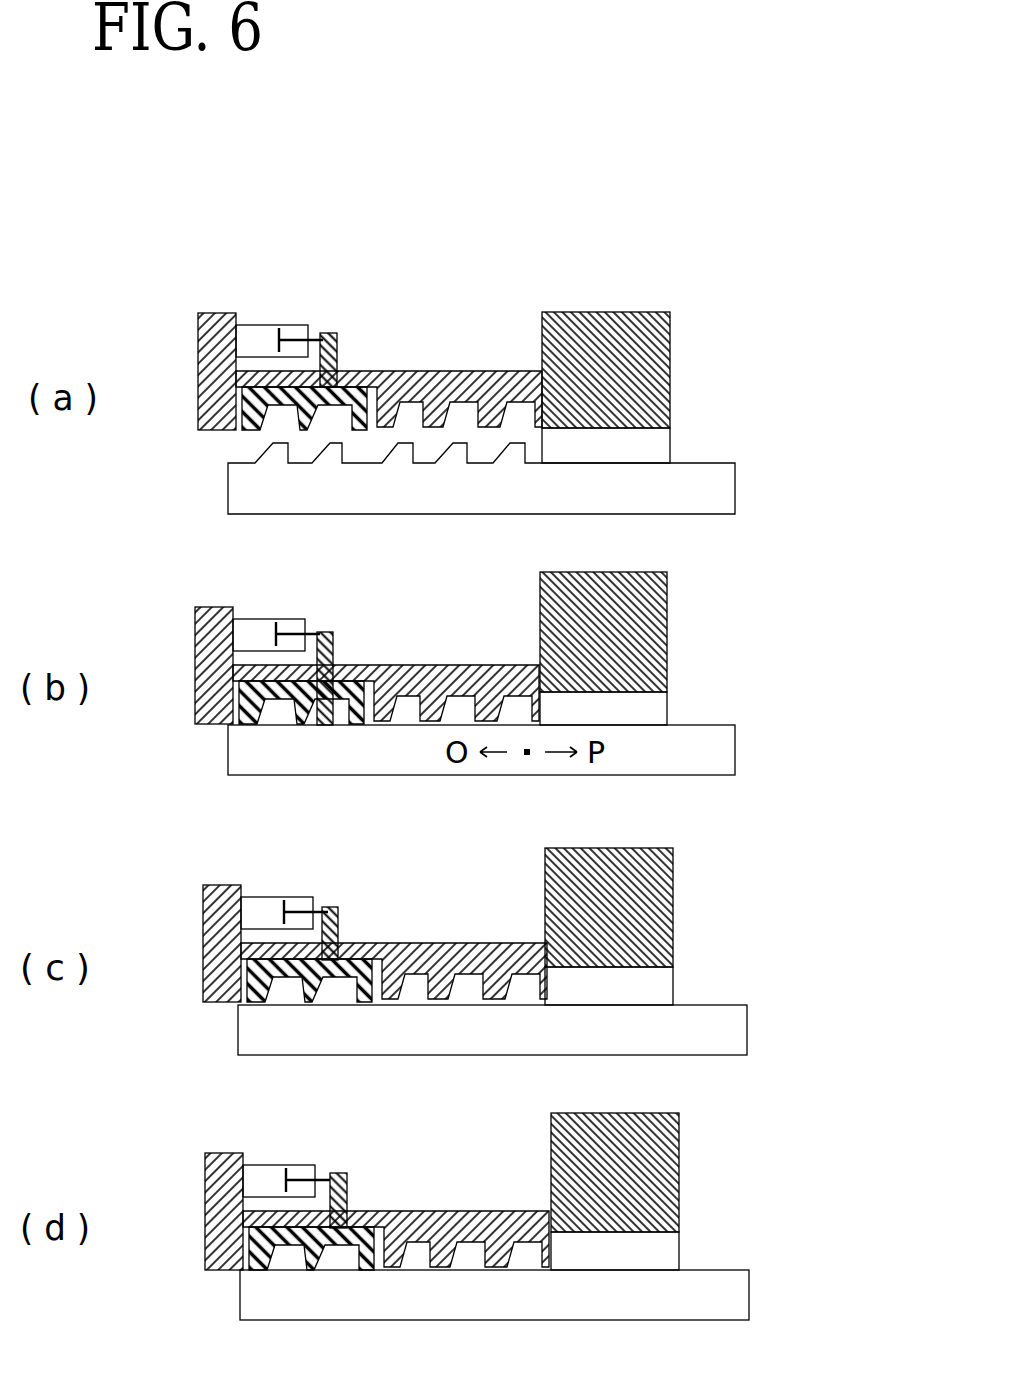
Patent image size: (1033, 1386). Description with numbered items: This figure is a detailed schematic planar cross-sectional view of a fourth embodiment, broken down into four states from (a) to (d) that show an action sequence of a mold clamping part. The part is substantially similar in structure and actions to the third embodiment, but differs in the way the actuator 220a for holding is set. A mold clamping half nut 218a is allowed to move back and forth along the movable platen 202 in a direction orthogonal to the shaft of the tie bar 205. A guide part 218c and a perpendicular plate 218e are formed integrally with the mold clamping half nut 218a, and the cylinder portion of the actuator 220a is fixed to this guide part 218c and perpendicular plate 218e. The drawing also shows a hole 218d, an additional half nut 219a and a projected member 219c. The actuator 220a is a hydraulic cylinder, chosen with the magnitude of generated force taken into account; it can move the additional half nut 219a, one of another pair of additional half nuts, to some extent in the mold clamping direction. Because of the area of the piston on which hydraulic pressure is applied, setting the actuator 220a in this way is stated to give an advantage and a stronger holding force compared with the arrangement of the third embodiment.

The movable platen 202 is at (608, 360).
The tie bar 205 is at (653, 493).
The mold clamping half nut 218a is at (450, 368).
The guide part 218c is at (297, 362).
The hole 218d is at (340, 667).
The perpendicular plate 218e is at (200, 330).
The additional half nut 219a is at (260, 432).
The projected member 219c is at (325, 632).
The actuator 220a is at (257, 348).